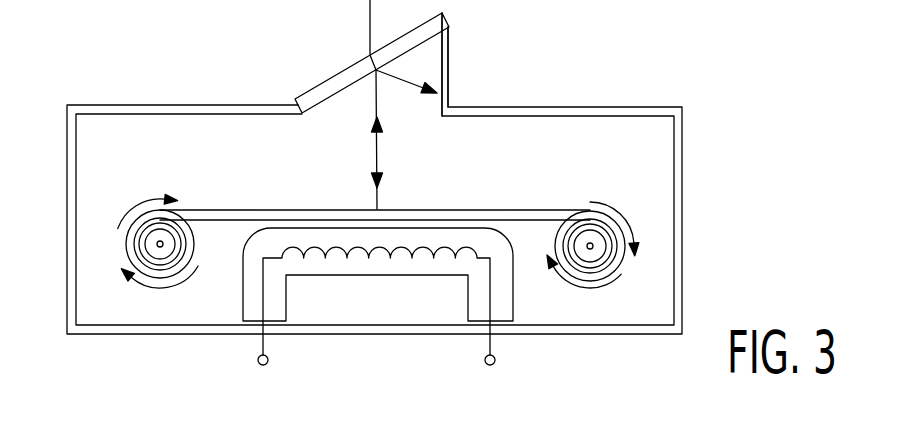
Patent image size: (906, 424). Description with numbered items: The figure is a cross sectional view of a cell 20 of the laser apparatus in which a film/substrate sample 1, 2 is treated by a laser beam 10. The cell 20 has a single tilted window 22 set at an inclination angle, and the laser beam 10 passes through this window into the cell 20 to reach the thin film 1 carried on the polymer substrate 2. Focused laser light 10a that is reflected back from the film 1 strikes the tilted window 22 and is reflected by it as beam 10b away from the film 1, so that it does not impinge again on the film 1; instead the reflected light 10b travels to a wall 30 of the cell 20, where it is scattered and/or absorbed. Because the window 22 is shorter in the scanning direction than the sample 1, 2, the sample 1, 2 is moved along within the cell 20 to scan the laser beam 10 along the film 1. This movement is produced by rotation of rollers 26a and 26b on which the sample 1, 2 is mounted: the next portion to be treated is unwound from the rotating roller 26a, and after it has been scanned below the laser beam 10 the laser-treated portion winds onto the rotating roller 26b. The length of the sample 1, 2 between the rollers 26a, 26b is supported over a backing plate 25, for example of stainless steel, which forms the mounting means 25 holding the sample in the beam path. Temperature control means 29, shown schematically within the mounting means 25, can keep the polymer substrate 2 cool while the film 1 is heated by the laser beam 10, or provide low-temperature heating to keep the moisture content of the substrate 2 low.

The film 1 is at (240, 208).
The polymer substrate 2 is at (270, 217).
The laser beam 10 is at (370, 12).
The focused laser light 10a is at (378, 152).
The reflected beam 10b is at (418, 84).
The cell 20 is at (640, 107).
The tilted window 22 is at (328, 89).
The mounting means / backing plate 25 is at (369, 266).
The roller 26a is at (150, 243).
The roller 26b is at (598, 252).
The temperature control means 29 is at (426, 256).
The wall 30 is at (449, 83).